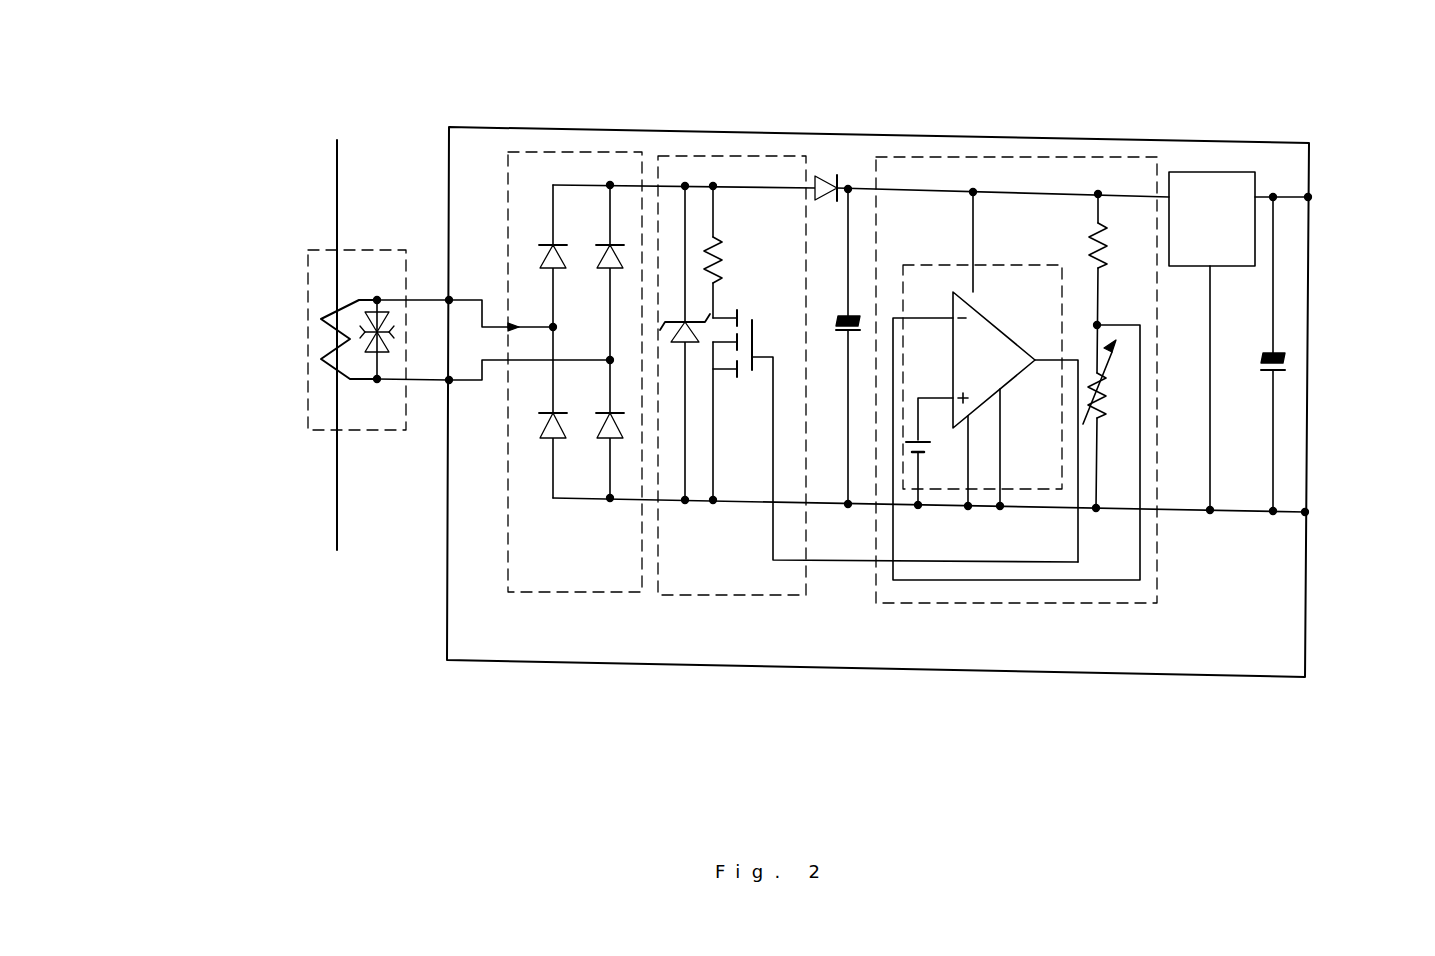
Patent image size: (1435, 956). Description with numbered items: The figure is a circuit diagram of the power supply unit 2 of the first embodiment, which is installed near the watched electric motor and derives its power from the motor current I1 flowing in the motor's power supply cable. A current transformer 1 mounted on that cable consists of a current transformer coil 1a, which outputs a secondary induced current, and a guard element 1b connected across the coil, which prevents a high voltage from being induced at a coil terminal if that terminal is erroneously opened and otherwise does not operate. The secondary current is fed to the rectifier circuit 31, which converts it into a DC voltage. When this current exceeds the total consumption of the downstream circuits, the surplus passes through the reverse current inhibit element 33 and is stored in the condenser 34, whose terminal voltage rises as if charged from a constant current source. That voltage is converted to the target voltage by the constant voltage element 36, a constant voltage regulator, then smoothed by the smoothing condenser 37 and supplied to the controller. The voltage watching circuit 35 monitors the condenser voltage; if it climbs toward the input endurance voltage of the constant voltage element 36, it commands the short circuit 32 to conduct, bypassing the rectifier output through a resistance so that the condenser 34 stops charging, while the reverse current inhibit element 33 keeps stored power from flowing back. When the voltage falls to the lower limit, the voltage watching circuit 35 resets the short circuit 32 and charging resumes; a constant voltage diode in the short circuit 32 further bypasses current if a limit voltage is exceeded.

The current transformer 1 is at (307, 272).
The current transformer coil 1a is at (355, 325).
The guard element 1b is at (370, 343).
The motor current I1 is at (337, 522).
The power supply unit 2 is at (445, 646).
The rectifier circuit 31 is at (558, 580).
The short circuit 32 is at (722, 580).
The reverse current inhibit element 33 is at (827, 177).
The condenser 34 is at (862, 305).
The voltage watching circuit 35 is at (1020, 595).
The constant voltage element 36 is at (1182, 172).
The smoothing condenser 37 is at (1290, 350).